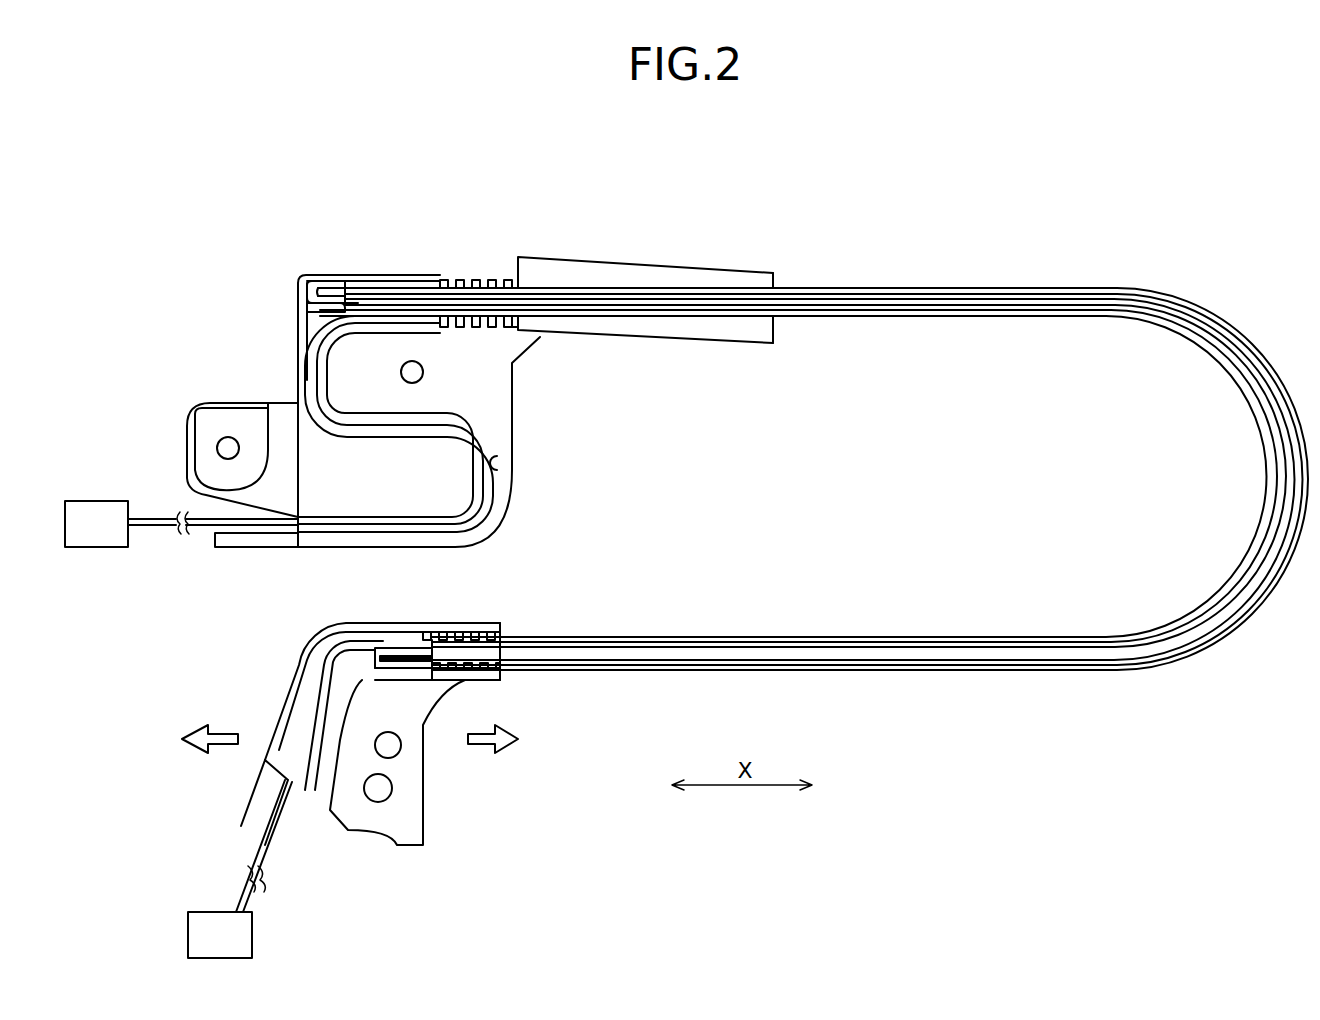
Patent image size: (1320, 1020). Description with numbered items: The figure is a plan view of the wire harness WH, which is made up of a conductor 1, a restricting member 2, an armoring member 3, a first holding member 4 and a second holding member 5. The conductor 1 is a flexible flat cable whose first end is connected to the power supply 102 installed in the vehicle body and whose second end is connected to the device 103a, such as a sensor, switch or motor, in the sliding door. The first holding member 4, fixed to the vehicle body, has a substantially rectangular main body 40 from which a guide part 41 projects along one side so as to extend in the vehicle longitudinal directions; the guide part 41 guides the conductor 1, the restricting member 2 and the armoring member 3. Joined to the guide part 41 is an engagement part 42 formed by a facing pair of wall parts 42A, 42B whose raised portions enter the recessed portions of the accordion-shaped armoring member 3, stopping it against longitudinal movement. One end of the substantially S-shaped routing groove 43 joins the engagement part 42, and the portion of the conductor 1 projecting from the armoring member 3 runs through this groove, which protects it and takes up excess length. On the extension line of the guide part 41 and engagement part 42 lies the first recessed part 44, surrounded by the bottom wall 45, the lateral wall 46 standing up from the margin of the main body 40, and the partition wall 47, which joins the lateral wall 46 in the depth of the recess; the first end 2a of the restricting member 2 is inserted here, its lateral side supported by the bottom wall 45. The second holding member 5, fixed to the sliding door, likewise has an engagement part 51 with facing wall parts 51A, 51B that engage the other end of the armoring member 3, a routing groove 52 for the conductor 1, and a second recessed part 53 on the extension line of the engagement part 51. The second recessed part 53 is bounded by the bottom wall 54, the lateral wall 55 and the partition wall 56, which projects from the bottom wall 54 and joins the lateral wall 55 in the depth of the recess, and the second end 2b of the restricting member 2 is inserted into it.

The conductor 1 is at (992, 300).
The restricting member 2 is at (943, 288).
The first end 2a is at (307, 282).
The second end 2b is at (380, 648).
The armoring member 3 is at (1134, 290).
The first holding member 4 is at (606, 260).
The second holding member 5 is at (494, 624).
The main body 40 is at (535, 436).
The guide part 41 is at (746, 270).
The engagement part 42 is at (488, 282).
The wall part 42A is at (498, 285).
The wall part 42B is at (490, 323).
The routing groove 43 is at (498, 462).
The first recessed part 44 is at (340, 289).
The bottom wall 45 is at (373, 303).
The lateral wall 46 is at (324, 280).
The partition wall 47 is at (330, 318).
The engagement part 51 is at (472, 628).
The wall part 51A is at (502, 676).
The wall part 51B is at (500, 632).
The routing groove 52 is at (310, 690).
The second recessed part 53 is at (433, 640).
The bottom wall 54 is at (335, 653).
The lateral wall 55 is at (410, 672).
The partition wall 56 is at (433, 660).
The power supply 102 is at (106, 501).
The device 103a is at (208, 912).
The wire harness WH is at (431, 200).